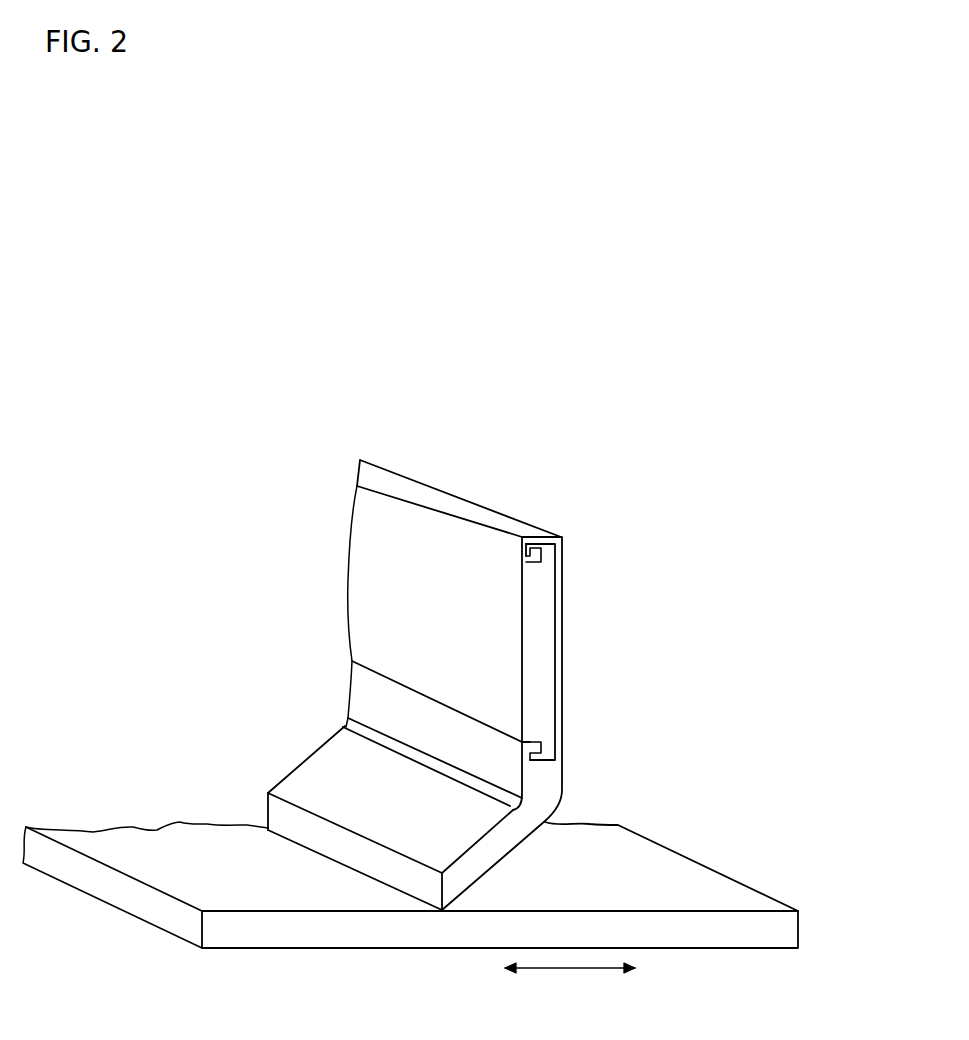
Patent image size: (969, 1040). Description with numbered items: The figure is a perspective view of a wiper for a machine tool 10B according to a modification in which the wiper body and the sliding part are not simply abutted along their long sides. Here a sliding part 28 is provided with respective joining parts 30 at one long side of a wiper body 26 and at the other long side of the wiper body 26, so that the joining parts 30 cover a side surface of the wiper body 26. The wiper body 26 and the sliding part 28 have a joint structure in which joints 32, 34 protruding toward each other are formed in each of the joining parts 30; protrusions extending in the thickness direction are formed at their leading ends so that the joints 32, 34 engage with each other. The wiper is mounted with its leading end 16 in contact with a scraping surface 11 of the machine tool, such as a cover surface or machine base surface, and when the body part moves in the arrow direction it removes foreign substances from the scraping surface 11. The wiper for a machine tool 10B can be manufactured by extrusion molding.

The wiper for a machine tool 10B is at (570, 507).
The scraping surface 11 is at (700, 885).
The leading end 16 is at (360, 874).
The wiper body 26 is at (380, 573).
The sliding part 28 is at (337, 774).
The joining parts 30 is at (570, 531).
The joint 32 is at (533, 563).
The joint 34 is at (538, 552).